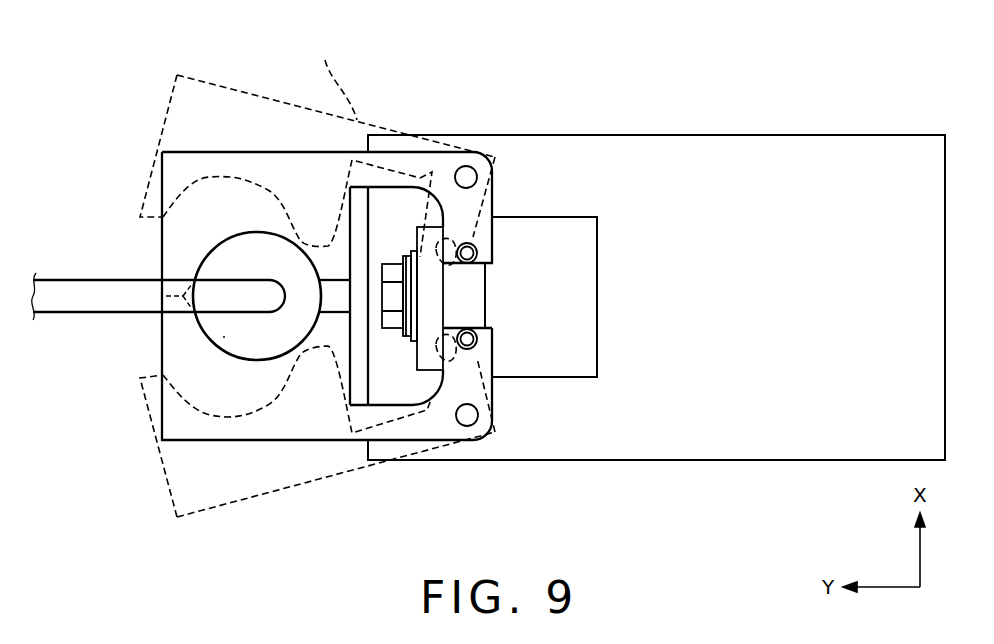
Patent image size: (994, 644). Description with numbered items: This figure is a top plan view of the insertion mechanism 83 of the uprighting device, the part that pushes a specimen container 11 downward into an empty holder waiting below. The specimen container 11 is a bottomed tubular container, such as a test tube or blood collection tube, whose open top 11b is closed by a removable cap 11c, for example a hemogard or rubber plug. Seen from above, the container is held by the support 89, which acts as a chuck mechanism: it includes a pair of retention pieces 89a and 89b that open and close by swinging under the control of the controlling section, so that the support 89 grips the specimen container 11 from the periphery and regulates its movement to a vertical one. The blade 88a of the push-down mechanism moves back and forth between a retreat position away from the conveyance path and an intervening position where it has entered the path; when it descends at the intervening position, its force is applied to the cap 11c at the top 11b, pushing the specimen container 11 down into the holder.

The specimen container 11 is at (257, 247).
The open top 11b is at (228, 260).
The removable cap 11c is at (223, 337).
The insertion mechanism 83 is at (432, 91).
The blade 88a is at (88, 297).
The support 89 is at (541, 147).
The retention piece 89a is at (297, 442).
The retention piece 89b is at (302, 163).